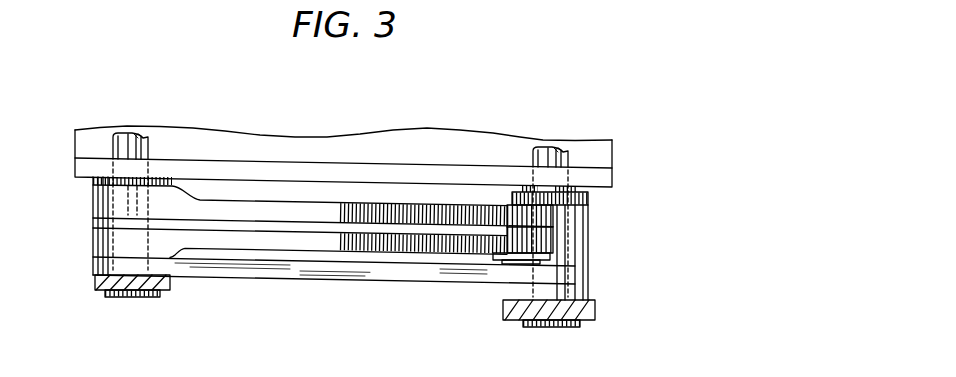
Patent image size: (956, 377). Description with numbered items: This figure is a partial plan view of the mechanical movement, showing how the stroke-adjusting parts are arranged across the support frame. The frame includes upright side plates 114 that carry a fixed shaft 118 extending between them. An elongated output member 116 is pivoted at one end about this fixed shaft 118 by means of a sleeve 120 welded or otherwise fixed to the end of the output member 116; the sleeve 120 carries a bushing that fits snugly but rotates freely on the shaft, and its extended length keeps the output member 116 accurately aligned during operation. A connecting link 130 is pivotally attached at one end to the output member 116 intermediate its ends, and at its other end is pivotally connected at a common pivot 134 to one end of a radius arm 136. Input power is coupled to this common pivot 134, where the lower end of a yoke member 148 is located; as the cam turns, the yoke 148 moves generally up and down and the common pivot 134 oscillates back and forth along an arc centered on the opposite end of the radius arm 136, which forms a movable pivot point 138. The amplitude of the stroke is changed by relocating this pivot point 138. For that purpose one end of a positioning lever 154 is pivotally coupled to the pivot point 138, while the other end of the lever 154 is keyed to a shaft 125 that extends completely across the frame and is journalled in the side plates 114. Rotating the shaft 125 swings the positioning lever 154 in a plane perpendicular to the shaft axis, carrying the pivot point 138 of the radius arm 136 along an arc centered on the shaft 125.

The side plates 114 is at (603, 179).
The output member 116 is at (592, 312).
The fixed shaft 118 is at (567, 146).
The sleeve 120 is at (580, 224).
The shaft 125 is at (142, 134).
The connecting link 130 is at (383, 274).
The pivot connection 134 is at (120, 222).
The radius arm 136 is at (302, 243).
The pivot point 138 is at (510, 263).
The yoke member 148 is at (95, 281).
The positioning lever 154 is at (373, 206).